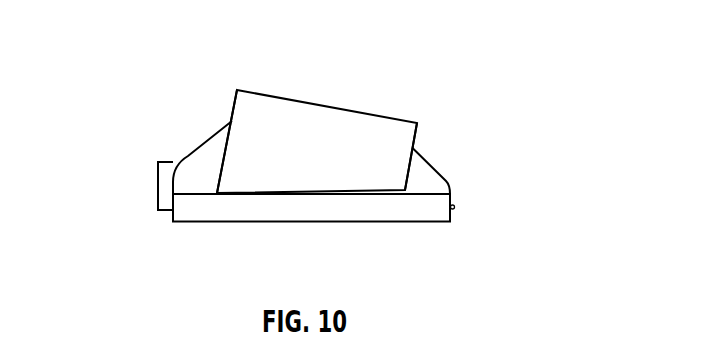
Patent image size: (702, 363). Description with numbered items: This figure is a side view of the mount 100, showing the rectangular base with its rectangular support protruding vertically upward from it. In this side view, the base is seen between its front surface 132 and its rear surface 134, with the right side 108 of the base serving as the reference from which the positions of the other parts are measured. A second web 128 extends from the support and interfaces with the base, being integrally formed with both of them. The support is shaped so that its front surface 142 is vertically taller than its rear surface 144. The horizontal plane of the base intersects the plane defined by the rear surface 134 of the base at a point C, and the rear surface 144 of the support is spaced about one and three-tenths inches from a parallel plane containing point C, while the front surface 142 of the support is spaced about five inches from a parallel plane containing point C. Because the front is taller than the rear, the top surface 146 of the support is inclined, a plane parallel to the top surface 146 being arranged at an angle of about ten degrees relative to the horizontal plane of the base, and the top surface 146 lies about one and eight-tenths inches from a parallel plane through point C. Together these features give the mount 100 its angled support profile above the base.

The mount 100 is at (459, 53).
The right side 108 is at (268, 207).
The second web 128 is at (200, 158).
The front surface 132 is at (170, 212).
The rear surface 134 is at (450, 217).
The point C is at (455, 206).
The front surface 142 is at (233, 102).
The rear surface 144 is at (415, 138).
The top surface 146 is at (292, 97).